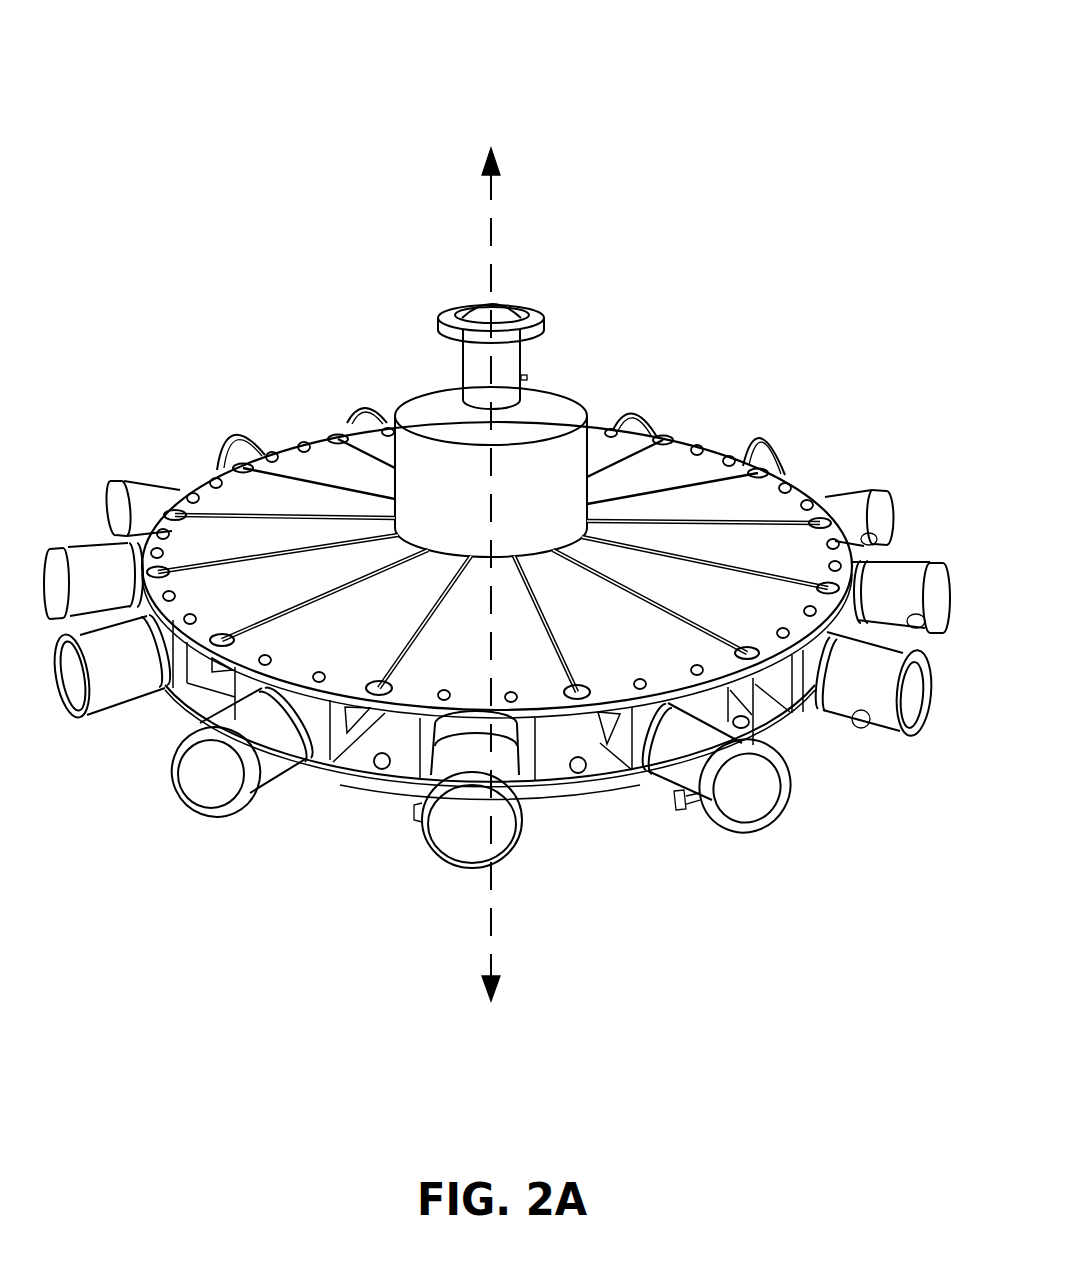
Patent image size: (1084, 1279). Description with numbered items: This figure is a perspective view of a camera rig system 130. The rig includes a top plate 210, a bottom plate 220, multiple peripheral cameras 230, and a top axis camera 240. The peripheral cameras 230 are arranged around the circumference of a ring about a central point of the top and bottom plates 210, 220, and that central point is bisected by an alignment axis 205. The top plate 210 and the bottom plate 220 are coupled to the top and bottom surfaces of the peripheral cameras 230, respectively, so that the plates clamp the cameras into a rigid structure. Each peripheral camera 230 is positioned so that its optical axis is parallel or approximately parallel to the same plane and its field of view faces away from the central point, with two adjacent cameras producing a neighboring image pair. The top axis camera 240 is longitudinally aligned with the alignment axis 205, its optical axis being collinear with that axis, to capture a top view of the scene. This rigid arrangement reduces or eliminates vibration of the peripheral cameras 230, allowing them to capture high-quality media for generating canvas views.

The camera rig system 130 is at (274, 25).
The alignment axis 205 is at (490, 238).
The top plate 210 is at (778, 507).
The bottom plate 220 is at (595, 758).
The peripheral cameras 230 is at (247, 805).
The top axis camera 240 is at (520, 300).